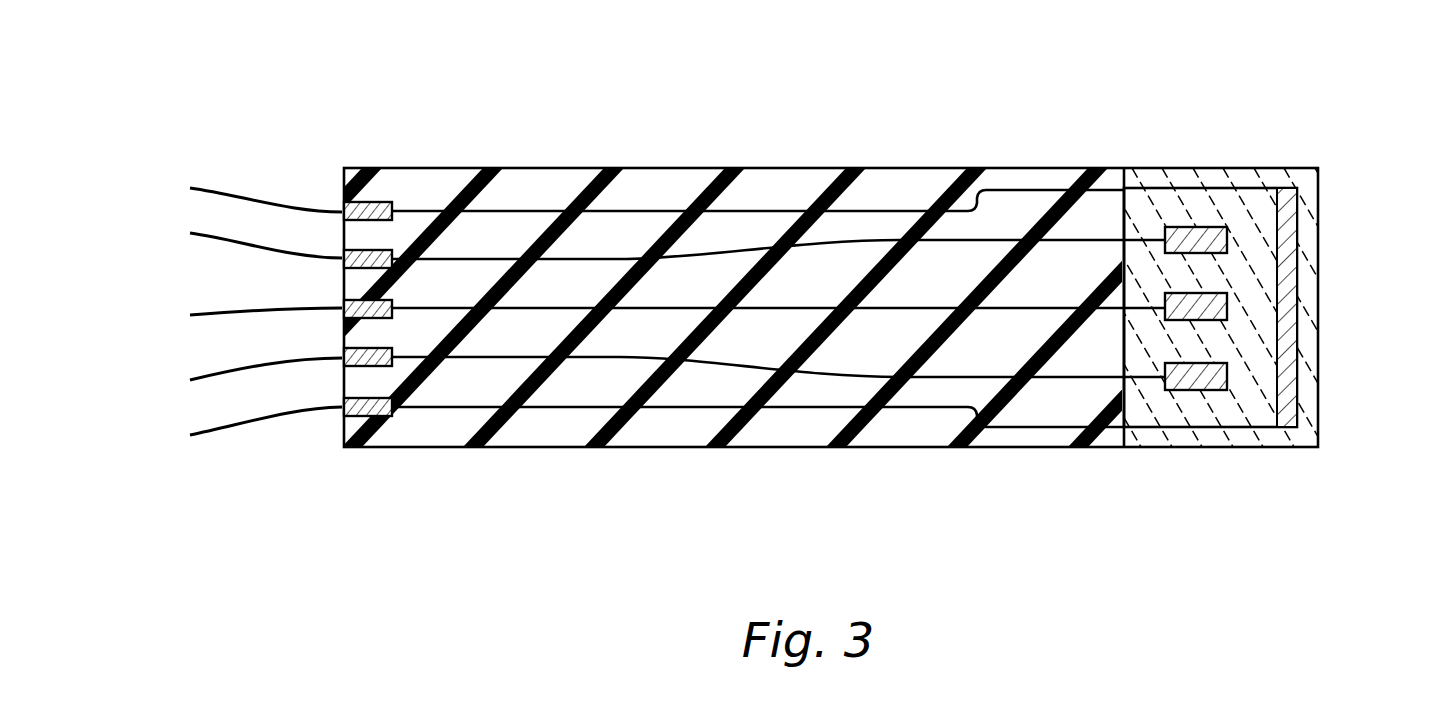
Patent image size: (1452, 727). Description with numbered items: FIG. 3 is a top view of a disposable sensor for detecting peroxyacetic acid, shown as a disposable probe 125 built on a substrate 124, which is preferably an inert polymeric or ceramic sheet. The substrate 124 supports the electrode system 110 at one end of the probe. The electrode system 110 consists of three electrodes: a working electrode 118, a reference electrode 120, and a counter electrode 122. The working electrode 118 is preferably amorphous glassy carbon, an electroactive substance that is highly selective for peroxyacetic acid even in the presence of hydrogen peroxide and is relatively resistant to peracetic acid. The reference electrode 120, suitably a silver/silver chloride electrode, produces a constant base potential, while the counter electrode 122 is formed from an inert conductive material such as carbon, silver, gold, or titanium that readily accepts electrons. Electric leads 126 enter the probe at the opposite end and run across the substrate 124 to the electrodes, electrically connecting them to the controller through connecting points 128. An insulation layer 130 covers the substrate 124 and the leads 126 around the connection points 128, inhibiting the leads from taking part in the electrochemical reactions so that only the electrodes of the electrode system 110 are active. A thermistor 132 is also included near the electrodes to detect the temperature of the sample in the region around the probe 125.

The electrode system 110 is at (1236, 202).
The working electrode 118 is at (1200, 363).
The reference electrode 120 is at (1197, 293).
The counter electrode 122 is at (1227, 235).
The substrate 124 is at (1193, 458).
The disposable probe 125 is at (792, 125).
The electric leads 126 is at (270, 211).
The connecting points 128 is at (390, 250).
The insulation layer 130 is at (757, 458).
The thermistor 132 is at (1290, 390).